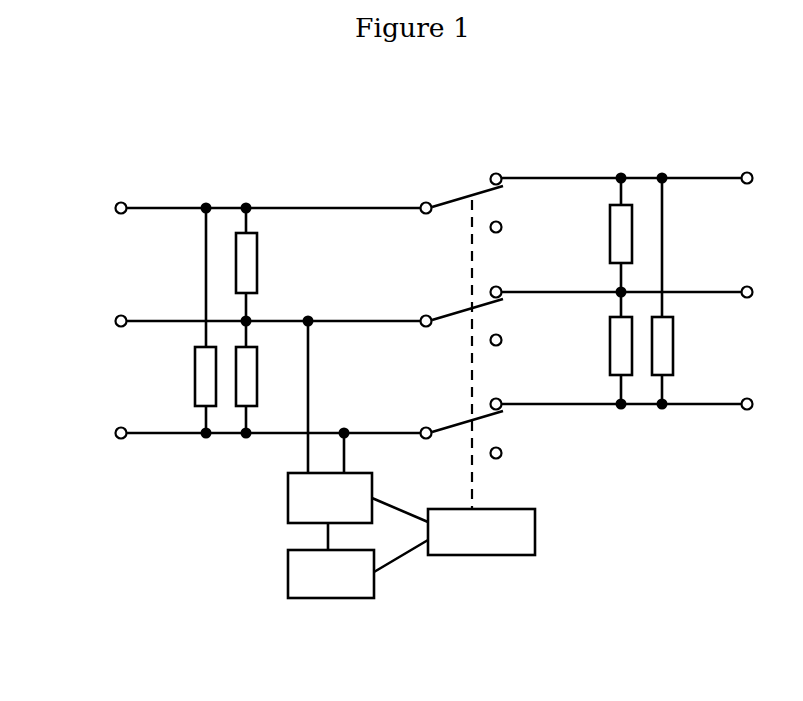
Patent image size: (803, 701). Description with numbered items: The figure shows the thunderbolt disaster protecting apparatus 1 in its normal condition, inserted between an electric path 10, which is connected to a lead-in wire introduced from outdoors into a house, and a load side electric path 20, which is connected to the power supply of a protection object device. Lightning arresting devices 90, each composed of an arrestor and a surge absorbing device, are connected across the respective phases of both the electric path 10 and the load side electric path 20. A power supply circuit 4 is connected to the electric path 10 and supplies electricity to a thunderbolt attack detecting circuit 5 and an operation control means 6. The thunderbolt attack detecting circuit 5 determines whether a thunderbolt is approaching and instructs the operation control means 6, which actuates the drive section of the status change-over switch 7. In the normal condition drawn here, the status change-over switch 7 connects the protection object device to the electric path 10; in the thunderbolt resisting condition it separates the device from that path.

The thunderbolt disaster protecting apparatus 1 is at (526, 135).
The electric path 10 is at (174, 196).
The load side electric path 20 is at (705, 163).
The status change-over switch 7 is at (469, 182).
The lightning arresting devices 90 is at (715, 505).
The power supply circuit 4 is at (312, 500).
The thunderbolt attack detecting circuit 5 is at (328, 577).
The operation control means 6 is at (475, 537).